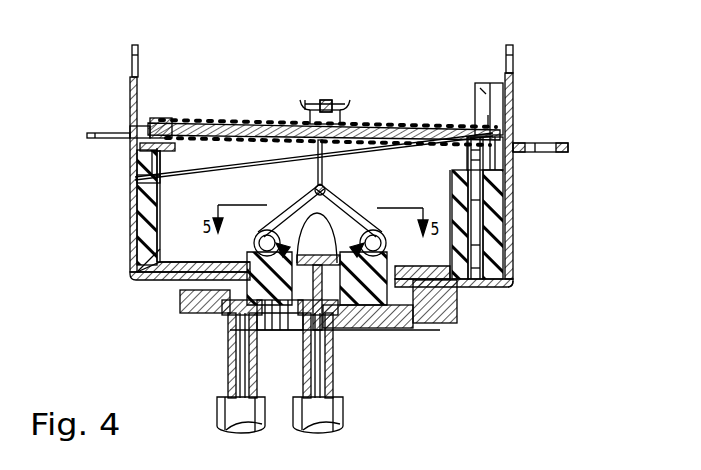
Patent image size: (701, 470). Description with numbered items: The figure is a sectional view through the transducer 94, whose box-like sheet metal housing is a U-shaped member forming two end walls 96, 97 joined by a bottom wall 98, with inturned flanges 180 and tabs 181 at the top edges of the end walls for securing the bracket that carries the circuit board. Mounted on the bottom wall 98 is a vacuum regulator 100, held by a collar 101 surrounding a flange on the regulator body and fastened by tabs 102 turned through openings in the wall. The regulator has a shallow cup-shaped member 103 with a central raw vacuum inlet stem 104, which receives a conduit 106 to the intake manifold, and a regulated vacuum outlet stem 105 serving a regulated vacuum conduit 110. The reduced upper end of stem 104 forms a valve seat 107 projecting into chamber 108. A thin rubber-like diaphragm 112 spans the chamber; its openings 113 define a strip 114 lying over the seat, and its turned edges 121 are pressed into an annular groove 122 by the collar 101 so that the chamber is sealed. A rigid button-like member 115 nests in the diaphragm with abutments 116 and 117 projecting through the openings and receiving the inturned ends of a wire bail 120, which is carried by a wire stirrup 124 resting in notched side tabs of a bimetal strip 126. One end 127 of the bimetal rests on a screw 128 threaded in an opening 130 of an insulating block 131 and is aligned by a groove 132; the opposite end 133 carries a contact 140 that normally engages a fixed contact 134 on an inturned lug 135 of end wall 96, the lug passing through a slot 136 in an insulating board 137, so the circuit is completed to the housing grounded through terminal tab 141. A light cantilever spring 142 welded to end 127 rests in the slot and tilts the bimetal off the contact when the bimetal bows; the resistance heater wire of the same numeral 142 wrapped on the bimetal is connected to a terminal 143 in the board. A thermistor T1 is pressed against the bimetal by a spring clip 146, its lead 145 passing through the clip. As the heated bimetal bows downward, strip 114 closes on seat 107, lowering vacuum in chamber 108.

The transducer 94 is at (524, 273).
The end wall 96 is at (129, 262).
The end wall 97 is at (514, 246).
The bottom wall 98 is at (150, 281).
The vacuum regulator 100 is at (428, 351).
The collar 101 is at (448, 318).
The tabs 102 is at (230, 264).
The cup-shaped member 103 is at (372, 330).
The raw vacuum inlet stem 104 is at (334, 384).
The regulated vacuum outlet stem 105 is at (228, 382).
The conduit 106 is at (342, 420).
The valve seat 107 is at (368, 318).
The chamber 108 is at (330, 330).
The regulated vacuum conduit 110 is at (220, 420).
The diaphragm 112 is at (255, 298).
The openings 113 is at (317, 234).
The strip 114 is at (318, 256).
The button-like member 115 is at (270, 331).
The abutment 116 is at (262, 224).
The abutment 117 is at (380, 231).
The wire bail 120 is at (345, 206).
The turned edges 121 is at (210, 314).
The annular groove 122 is at (233, 336).
The wire stirrup 124 is at (316, 180).
The bimetal strip 126 is at (254, 122).
The end of bimetal 127 is at (470, 134).
The screw 128 is at (486, 210).
The opening 130 is at (474, 288).
The insulating block 131 is at (492, 190).
The groove 132 is at (484, 100).
The end of bimetal 133 is at (165, 118).
The fixed contact 134 is at (140, 148).
The inturned lug 135 is at (137, 179).
The slot 136 is at (161, 166).
The insulating board 137 is at (138, 202).
The contact 140 is at (136, 130).
The terminal tab 141 is at (540, 143).
The cantilever spring 142 is at (374, 125).
The terminal 143 is at (86, 135).
The lead 145 is at (327, 100).
The spring clip 146 is at (310, 104).
The inturned flanges 180 is at (177, 268).
The tabs 181 is at (133, 44).
The thermistor T1 is at (340, 104).